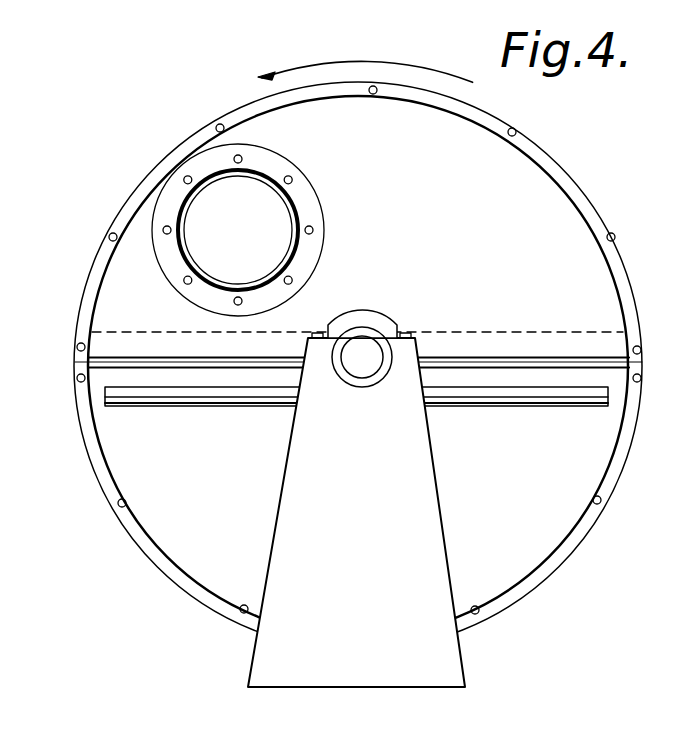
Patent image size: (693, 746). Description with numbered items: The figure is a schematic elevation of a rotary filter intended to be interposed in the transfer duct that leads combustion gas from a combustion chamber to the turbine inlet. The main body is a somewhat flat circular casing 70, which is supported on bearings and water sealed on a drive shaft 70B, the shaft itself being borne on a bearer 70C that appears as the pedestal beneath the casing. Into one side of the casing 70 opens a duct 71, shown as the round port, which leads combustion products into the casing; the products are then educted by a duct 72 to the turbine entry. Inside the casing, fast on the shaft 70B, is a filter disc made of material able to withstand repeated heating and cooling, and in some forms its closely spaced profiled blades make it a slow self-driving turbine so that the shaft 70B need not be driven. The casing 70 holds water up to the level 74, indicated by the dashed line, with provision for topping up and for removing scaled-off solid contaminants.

The casing 70 is at (557, 198).
The drive shaft 70B is at (368, 352).
The bearer 70C is at (417, 488).
The duct 71 is at (214, 216).
The duct 72 is at (198, 222).
The water level 74 is at (560, 332).